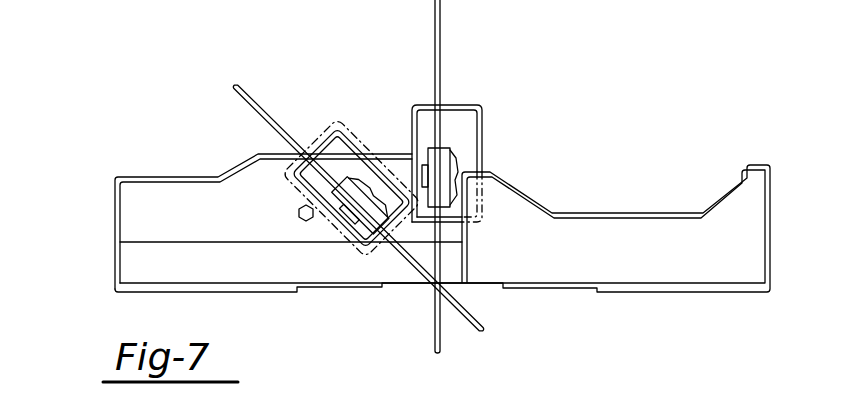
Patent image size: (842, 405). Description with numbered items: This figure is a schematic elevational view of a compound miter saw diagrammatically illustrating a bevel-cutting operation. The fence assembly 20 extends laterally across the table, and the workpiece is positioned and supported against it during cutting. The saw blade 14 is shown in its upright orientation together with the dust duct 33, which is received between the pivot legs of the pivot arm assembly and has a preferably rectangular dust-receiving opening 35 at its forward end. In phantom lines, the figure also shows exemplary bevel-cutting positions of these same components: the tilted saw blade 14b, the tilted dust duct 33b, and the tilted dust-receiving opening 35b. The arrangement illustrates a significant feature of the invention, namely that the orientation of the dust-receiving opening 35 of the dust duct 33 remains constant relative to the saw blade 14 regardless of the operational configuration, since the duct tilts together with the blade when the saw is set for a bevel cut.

The saw blade 14 is at (441, 53).
The bevel-cutting position of the saw blade 14b is at (277, 122).
The fence assembly 20 is at (143, 197).
The dust duct 33 is at (485, 123).
The bevel-cutting position of the dust duct 33b is at (360, 143).
The dust-receiving opening 35 is at (463, 150).
The bevel-cutting position of the dust-receiving opening 35b is at (300, 192).